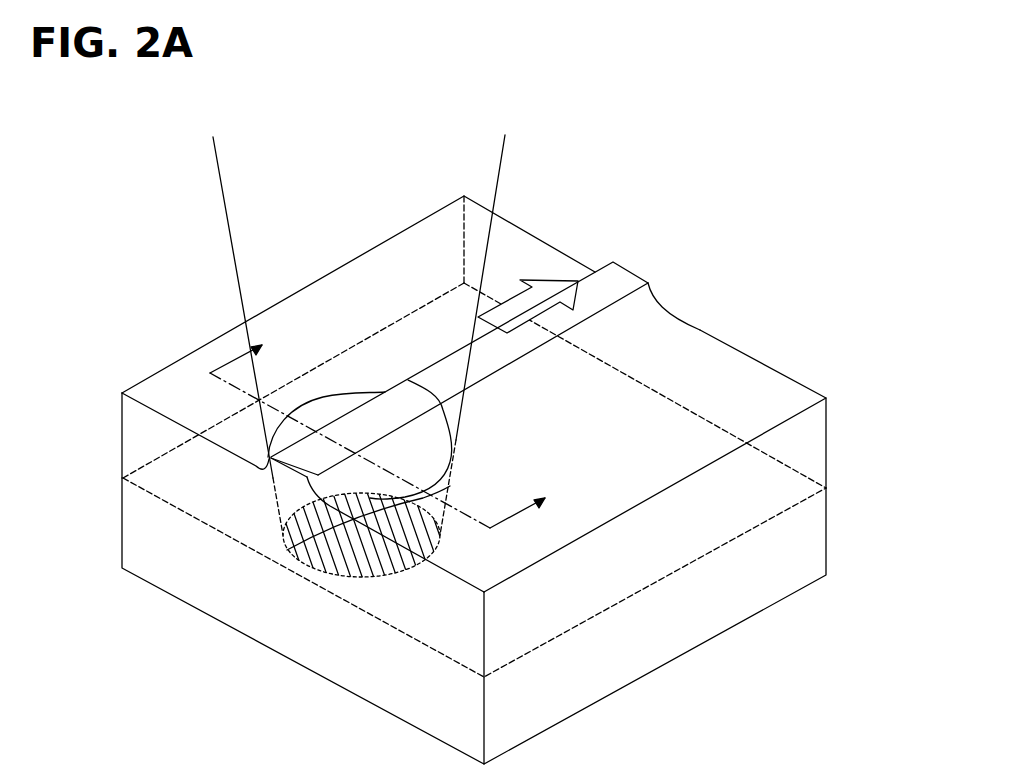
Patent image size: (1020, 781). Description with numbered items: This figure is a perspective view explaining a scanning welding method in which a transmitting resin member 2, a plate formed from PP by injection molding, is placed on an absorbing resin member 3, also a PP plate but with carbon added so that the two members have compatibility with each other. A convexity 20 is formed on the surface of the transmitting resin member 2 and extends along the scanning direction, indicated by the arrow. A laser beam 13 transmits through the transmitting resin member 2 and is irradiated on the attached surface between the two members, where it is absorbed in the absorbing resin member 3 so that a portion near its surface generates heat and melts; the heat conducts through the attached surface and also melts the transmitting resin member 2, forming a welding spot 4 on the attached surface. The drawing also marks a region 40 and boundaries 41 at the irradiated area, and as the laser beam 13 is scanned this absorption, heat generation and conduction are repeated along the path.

The transmitting resin member 2 is at (175, 392).
The absorbing resin member 3 is at (150, 533).
The welding spot 4 is at (320, 585).
The laser beam 13 is at (237, 281).
The convexity 20 is at (612, 285).
The molten portion 40 is at (357, 497).
The beam boundary 41 is at (300, 508).